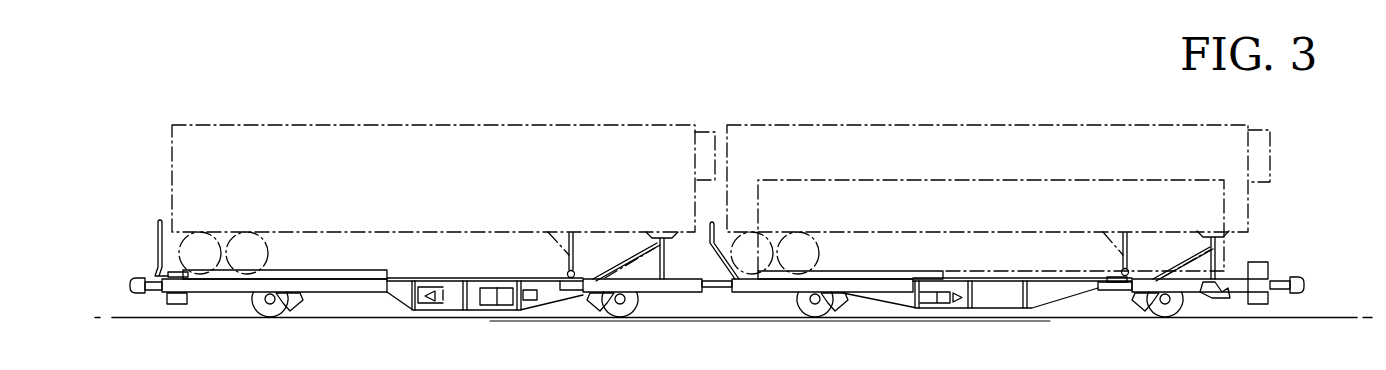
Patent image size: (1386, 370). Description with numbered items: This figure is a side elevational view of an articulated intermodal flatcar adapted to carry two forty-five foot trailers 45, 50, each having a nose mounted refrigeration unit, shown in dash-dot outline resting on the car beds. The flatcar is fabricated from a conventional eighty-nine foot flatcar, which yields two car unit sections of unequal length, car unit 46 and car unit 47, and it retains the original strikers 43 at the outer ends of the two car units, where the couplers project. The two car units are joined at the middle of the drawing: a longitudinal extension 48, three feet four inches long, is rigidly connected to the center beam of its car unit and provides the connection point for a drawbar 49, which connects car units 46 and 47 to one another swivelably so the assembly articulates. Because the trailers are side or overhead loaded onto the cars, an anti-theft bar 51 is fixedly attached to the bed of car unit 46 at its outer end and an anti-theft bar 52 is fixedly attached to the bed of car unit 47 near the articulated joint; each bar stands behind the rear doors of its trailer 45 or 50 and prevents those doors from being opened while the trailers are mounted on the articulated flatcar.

The strikers 43 is at (162, 293).
The 45 foot trailer 45 is at (490, 125).
The car unit 46 is at (245, 280).
The car unit 47 is at (897, 281).
The longitudinal extension 48 is at (688, 293).
The drawbar 49 is at (722, 289).
The 45 foot trailer 50 is at (1043, 125).
The anti-theft bar 51 is at (157, 233).
The anti-theft bar 52 is at (708, 248).